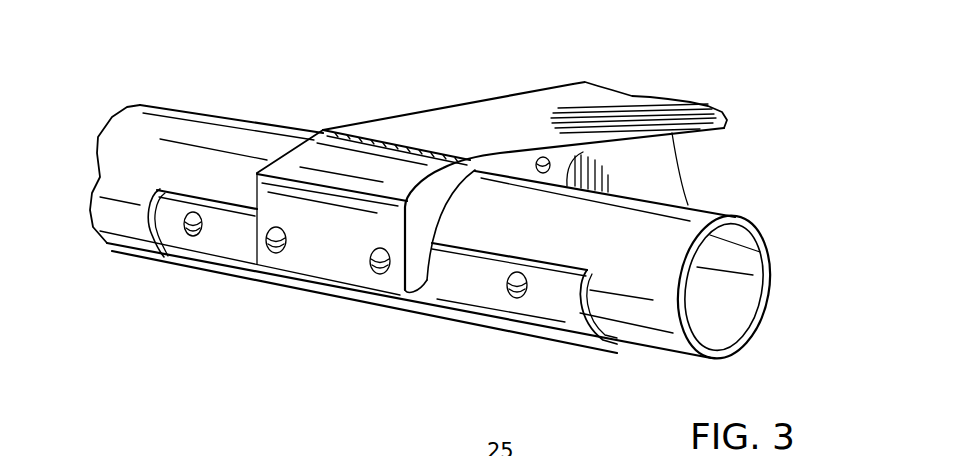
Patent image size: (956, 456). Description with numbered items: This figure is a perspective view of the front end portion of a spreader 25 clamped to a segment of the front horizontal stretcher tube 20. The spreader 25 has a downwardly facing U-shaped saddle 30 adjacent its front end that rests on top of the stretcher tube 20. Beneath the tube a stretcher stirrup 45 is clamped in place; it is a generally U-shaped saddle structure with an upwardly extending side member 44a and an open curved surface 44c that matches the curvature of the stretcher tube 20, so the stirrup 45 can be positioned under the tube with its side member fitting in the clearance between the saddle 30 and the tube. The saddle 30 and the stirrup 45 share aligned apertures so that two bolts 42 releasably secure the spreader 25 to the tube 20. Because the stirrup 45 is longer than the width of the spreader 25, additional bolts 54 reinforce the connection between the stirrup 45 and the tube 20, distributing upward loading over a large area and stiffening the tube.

The stretcher tube 20 is at (657, 227).
The spreader 25 is at (493, 100).
The saddle 30 is at (350, 160).
The bolts 42 is at (265, 255).
The stretcher stirrup 45 is at (383, 306).
The additional bolts 54 is at (190, 238).
The side member 44a is at (548, 337).
The open curved surface 44c is at (552, 297).